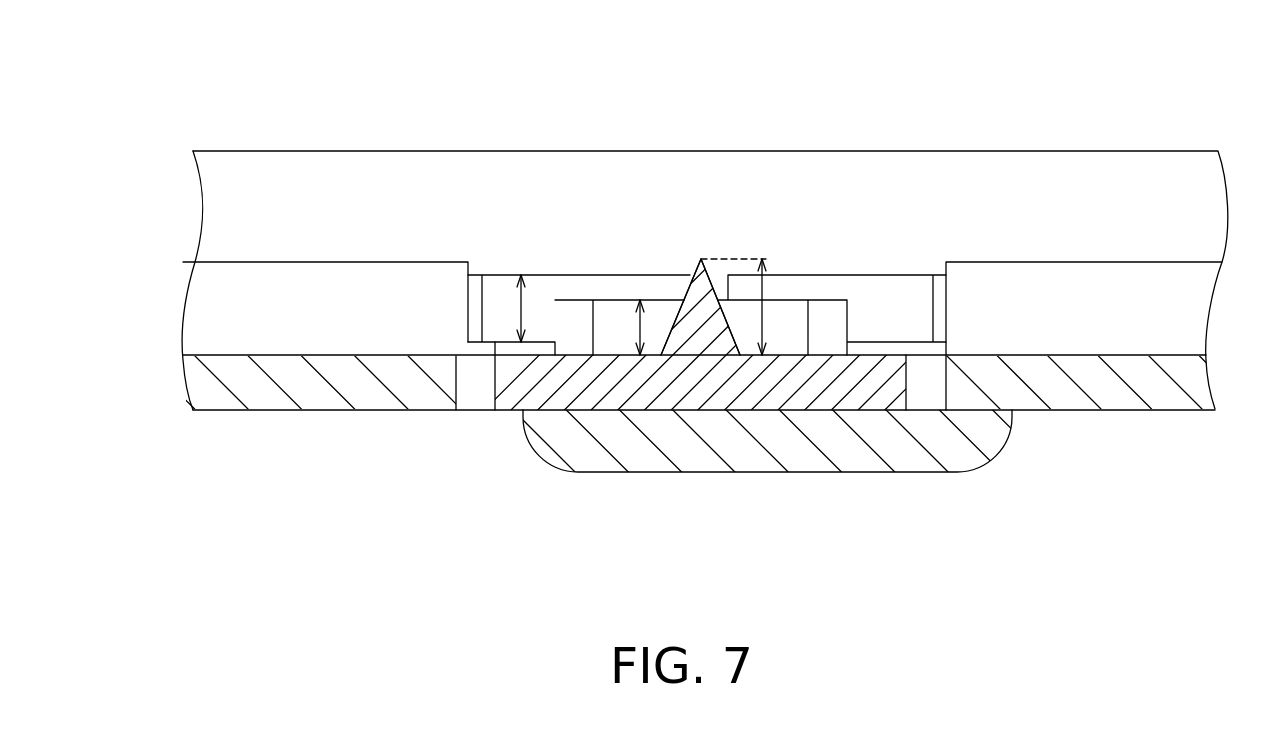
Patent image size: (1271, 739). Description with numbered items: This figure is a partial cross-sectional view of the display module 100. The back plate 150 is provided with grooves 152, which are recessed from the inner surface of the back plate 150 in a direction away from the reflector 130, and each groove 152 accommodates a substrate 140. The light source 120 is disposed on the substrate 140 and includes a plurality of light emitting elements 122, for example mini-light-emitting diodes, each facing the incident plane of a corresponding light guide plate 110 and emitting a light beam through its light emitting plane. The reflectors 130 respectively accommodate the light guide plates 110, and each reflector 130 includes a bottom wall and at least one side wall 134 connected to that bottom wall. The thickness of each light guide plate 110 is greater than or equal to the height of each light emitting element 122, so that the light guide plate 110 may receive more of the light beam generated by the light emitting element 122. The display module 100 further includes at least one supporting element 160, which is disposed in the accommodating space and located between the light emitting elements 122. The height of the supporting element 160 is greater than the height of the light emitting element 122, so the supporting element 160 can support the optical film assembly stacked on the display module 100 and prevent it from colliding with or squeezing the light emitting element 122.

The display module 100 is at (252, 568).
The light guide plate 110 is at (537, 270).
The light source 120 is at (700, 414).
The light emitting element 122 is at (742, 335).
The reflector 130 is at (723, 305).
The side wall 134 is at (365, 303).
The substrate 140 is at (527, 382).
The back plate 150 is at (223, 198).
The groove 152 is at (945, 370).
The supporting element 160 is at (690, 333).